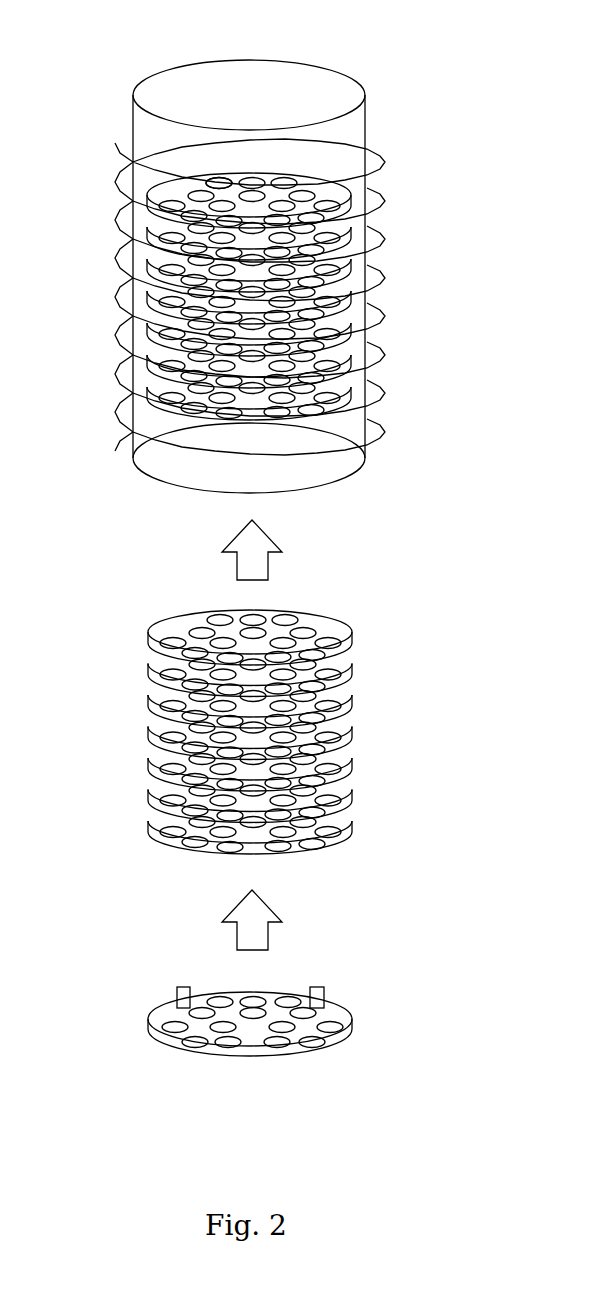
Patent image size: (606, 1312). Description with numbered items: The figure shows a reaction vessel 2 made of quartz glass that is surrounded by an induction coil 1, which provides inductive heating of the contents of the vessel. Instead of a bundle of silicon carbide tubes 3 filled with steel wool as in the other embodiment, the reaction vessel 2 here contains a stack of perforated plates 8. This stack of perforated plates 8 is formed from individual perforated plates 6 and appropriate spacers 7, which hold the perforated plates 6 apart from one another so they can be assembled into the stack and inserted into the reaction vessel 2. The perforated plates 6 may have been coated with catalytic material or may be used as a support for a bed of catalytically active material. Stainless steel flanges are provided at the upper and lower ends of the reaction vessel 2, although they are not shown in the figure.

The induction coil 1 is at (380, 195).
The reaction vessel 2 is at (353, 130).
The silicon carbide tube 3 is at (227, 177).
The perforated plate 6 is at (170, 1010).
The spacer 7 is at (182, 992).
The stack of perforated plates 8 is at (187, 177).